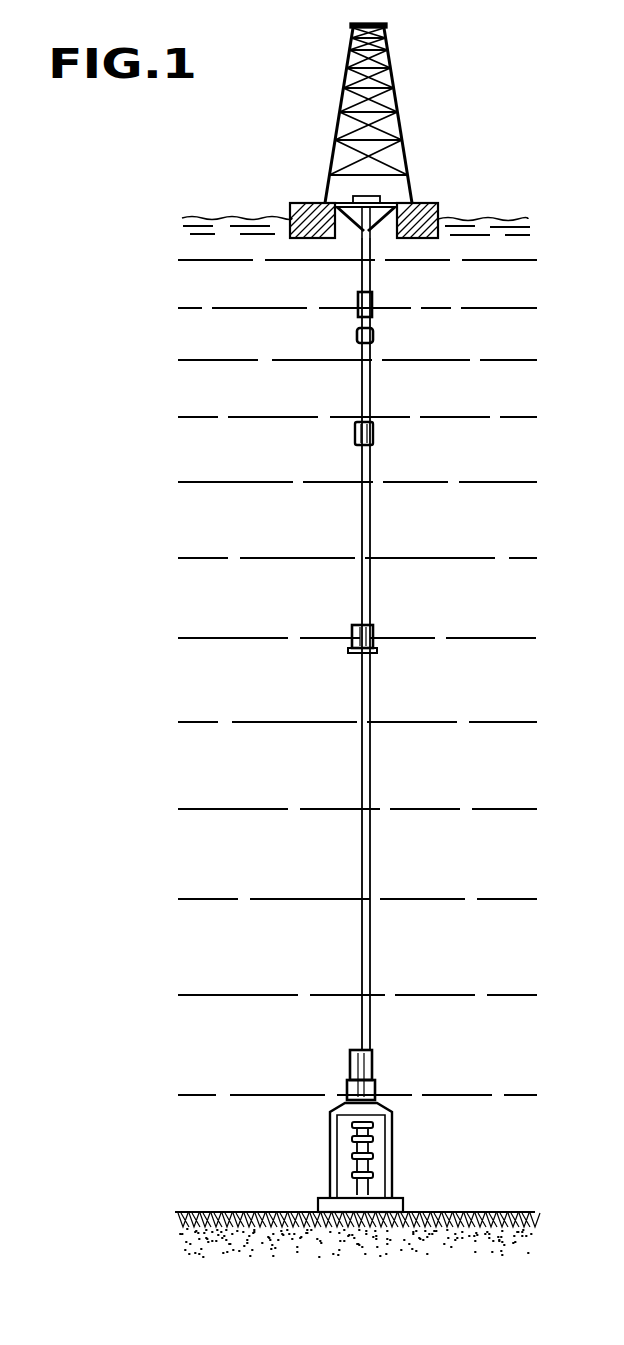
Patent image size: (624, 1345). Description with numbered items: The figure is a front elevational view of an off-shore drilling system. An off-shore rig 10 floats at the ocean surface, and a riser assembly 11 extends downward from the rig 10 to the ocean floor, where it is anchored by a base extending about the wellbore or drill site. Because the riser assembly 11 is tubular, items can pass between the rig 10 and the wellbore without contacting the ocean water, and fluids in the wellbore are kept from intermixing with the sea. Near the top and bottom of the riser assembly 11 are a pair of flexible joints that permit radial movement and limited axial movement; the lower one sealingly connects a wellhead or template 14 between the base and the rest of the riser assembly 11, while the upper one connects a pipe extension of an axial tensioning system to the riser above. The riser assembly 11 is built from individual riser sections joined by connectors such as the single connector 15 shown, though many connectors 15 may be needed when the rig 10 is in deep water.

The off-shore rig 10 is at (412, 90).
The riser assembly 11 is at (412, 475).
The wellhead or template 14 is at (400, 1140).
The connector 15 is at (376, 648).